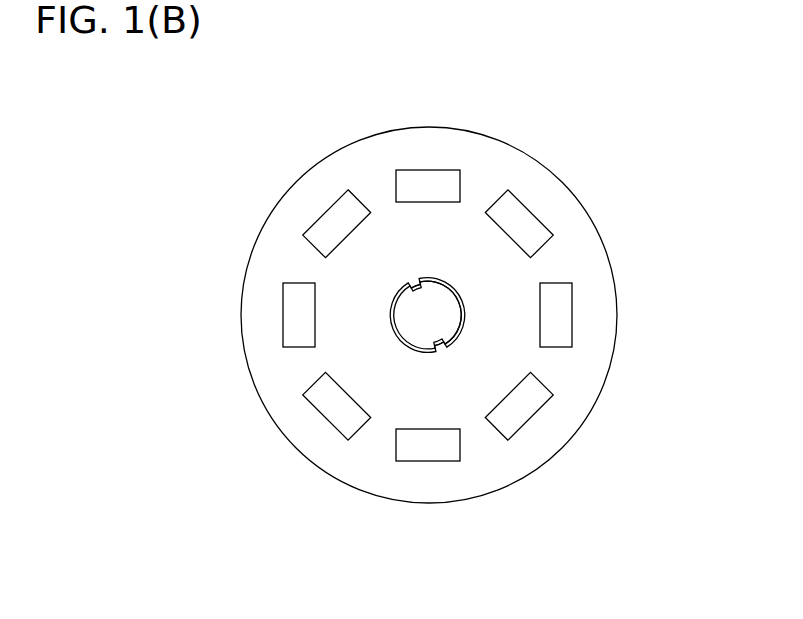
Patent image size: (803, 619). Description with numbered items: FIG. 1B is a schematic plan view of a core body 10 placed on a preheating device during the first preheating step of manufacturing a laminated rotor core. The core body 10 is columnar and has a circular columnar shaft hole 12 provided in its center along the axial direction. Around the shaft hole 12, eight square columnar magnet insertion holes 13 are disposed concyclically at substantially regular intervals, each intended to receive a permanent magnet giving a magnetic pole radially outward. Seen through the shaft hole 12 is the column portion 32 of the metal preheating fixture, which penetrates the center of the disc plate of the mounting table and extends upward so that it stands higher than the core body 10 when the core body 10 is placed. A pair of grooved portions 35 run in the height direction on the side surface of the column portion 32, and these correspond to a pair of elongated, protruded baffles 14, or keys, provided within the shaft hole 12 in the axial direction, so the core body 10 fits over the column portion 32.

The core body 10 is at (475, 160).
The magnet insertion holes 13 is at (527, 223).
The shaft hole 12 is at (462, 297).
The grooved portions 35 is at (418, 288).
The column portion 32 is at (440, 318).
The baffles 14 is at (441, 346).